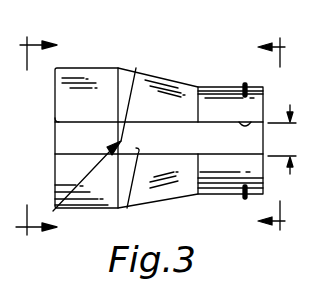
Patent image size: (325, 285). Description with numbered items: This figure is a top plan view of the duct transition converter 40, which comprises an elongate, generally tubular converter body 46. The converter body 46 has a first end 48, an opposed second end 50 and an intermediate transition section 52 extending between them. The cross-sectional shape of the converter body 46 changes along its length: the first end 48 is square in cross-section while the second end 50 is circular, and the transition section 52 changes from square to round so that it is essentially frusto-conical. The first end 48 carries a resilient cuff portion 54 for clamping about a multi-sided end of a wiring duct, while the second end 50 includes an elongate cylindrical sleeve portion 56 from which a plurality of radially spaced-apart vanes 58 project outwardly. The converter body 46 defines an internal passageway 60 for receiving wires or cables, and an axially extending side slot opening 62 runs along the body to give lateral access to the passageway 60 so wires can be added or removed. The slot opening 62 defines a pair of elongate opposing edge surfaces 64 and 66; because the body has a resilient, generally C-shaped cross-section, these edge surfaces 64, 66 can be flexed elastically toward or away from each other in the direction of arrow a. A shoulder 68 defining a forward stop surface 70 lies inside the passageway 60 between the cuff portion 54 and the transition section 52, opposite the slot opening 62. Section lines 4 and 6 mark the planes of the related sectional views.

The duct transition converter 40 is at (112, 34).
The converter body 46 is at (153, 79).
The first end 48 is at (57, 196).
The second end 50 is at (270, 186).
The transition section 52 is at (181, 197).
The cuff portion 54 is at (100, 149).
The sleeve portion 56 is at (226, 88).
The vanes 58 is at (250, 85).
The internal passageway 60 is at (250, 137).
The slot opening 62 is at (256, 122).
The edge surface 64 is at (55, 132).
The edge surface 66 is at (127, 208).
The shoulder 68 is at (136, 68).
The forward stop surface 70 is at (74, 185).
The arrow a is at (282, 139).
The section line 4- 4 is at (43, 137).
The section line 6- 6 is at (264, 136).